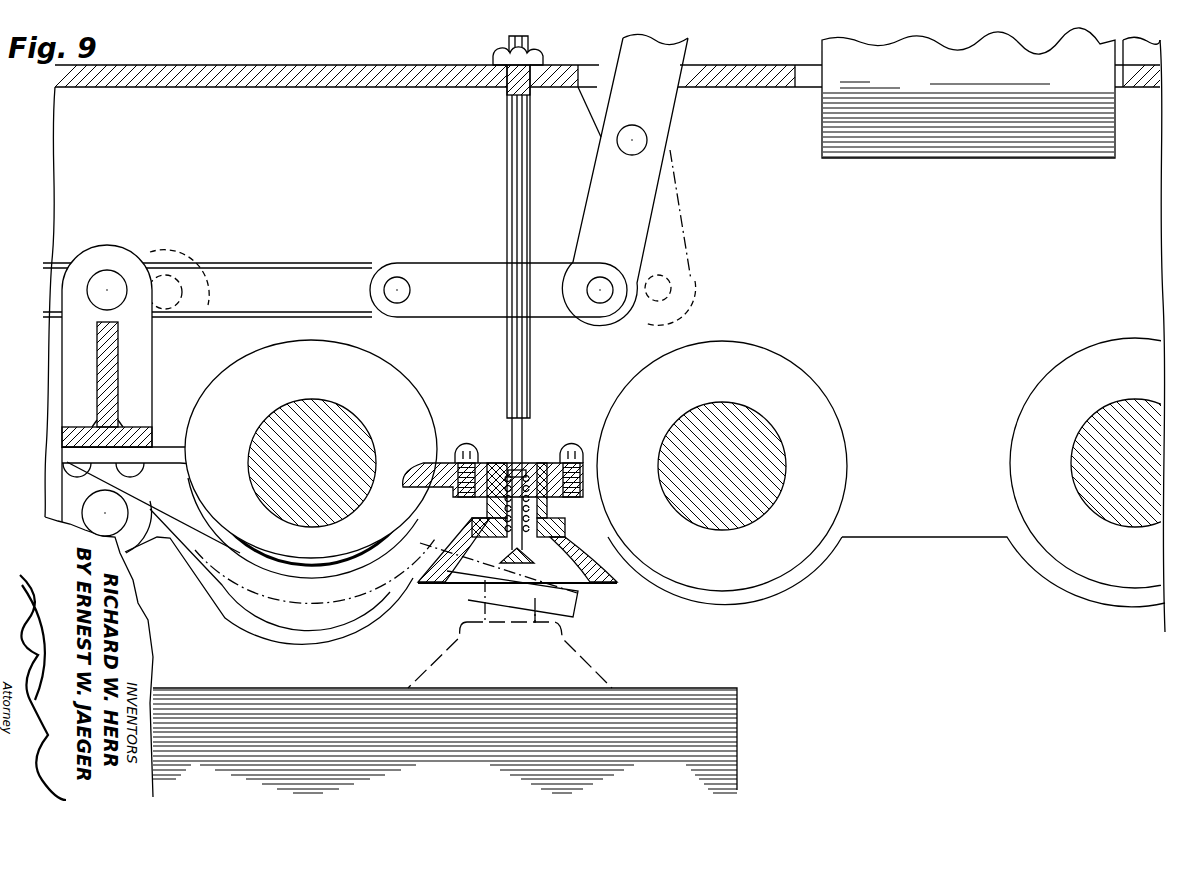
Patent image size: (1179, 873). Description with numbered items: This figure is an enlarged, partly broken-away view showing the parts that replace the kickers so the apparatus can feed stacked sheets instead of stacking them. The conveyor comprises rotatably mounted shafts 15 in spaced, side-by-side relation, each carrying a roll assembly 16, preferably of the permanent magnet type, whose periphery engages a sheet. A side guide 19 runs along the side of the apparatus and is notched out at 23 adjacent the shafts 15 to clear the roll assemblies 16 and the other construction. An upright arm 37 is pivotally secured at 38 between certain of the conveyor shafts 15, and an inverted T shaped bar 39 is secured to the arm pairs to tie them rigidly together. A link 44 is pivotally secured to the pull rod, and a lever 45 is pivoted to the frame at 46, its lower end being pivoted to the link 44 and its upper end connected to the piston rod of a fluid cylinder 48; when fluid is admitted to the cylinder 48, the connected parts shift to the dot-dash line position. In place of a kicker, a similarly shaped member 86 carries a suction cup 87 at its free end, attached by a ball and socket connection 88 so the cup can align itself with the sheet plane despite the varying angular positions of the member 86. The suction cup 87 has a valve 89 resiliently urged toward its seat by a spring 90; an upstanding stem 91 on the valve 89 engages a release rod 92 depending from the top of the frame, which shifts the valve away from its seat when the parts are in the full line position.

The shaft 15 is at (360, 425).
The roll assembly 16 is at (291, 334).
The side guide 19 is at (925, 557).
The notch 23 is at (302, 642).
The upright arm 37 is at (122, 268).
The pivot 38 is at (113, 509).
The inverted T shaped bar 39 is at (118, 365).
The link 44 is at (455, 277).
The lever 45 is at (633, 193).
The pivot 46 is at (644, 142).
The fluid cylinder 48 is at (952, 128).
The member 86 is at (238, 555).
The suction cup 87 is at (608, 556).
The ball and socket connection 88 is at (550, 460).
The valve 89 is at (504, 571).
The spring 90 is at (547, 507).
The stem 91 is at (515, 437).
The release rod 92 is at (530, 350).